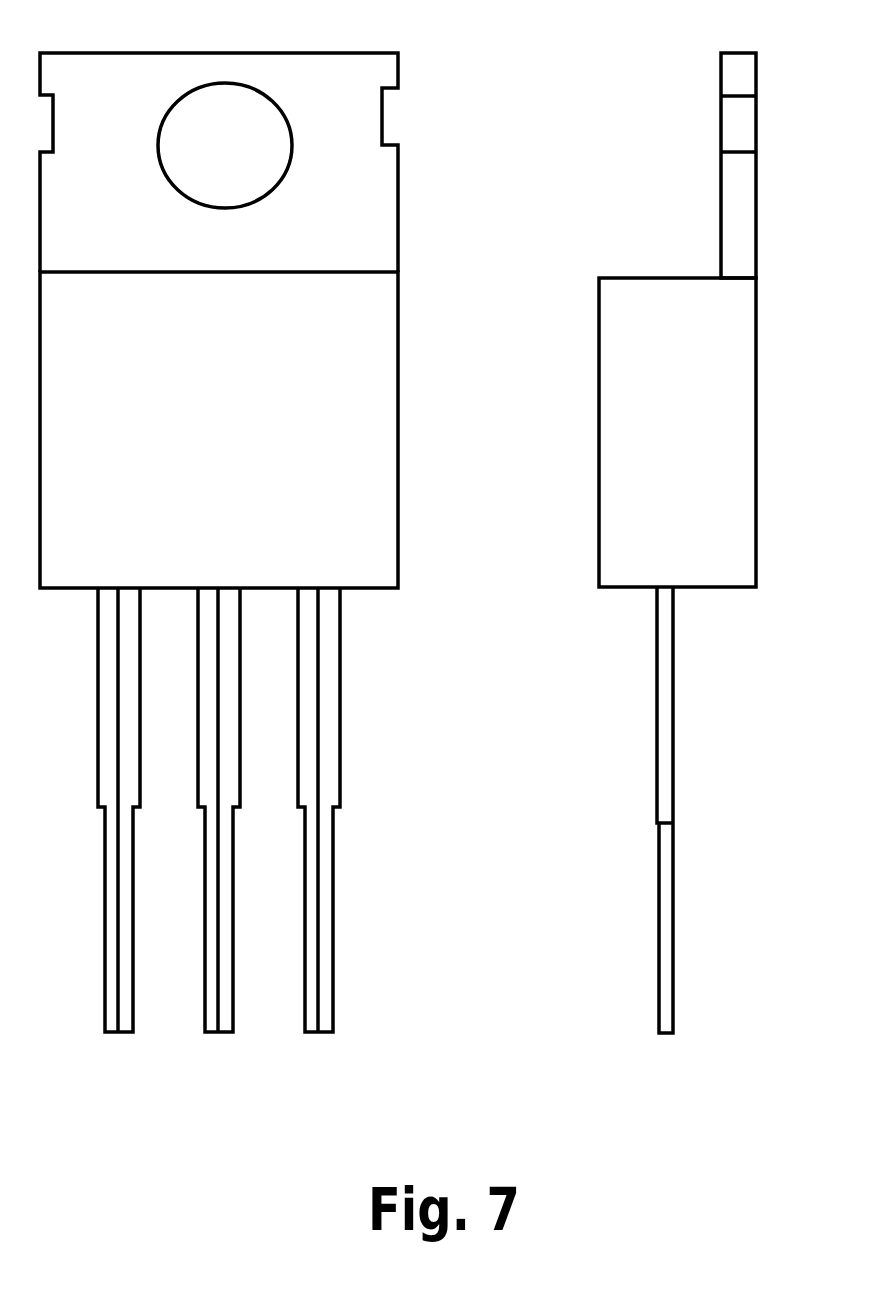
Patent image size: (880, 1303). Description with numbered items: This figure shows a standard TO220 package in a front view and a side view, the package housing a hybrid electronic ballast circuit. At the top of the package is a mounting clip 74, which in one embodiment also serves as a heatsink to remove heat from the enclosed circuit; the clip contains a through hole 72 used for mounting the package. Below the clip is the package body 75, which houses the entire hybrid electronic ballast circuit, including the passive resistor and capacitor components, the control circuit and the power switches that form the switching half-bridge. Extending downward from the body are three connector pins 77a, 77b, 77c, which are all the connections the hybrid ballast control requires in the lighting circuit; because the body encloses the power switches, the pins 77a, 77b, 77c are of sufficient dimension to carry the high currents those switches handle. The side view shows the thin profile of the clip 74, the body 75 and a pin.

The through hole 72 is at (197, 185).
The mounting clip 74 is at (375, 185).
The package body 75 is at (375, 407).
The connector pin 77a is at (110, 1035).
The connector pin 77b is at (211, 1035).
The connector pin 77c is at (311, 1035).